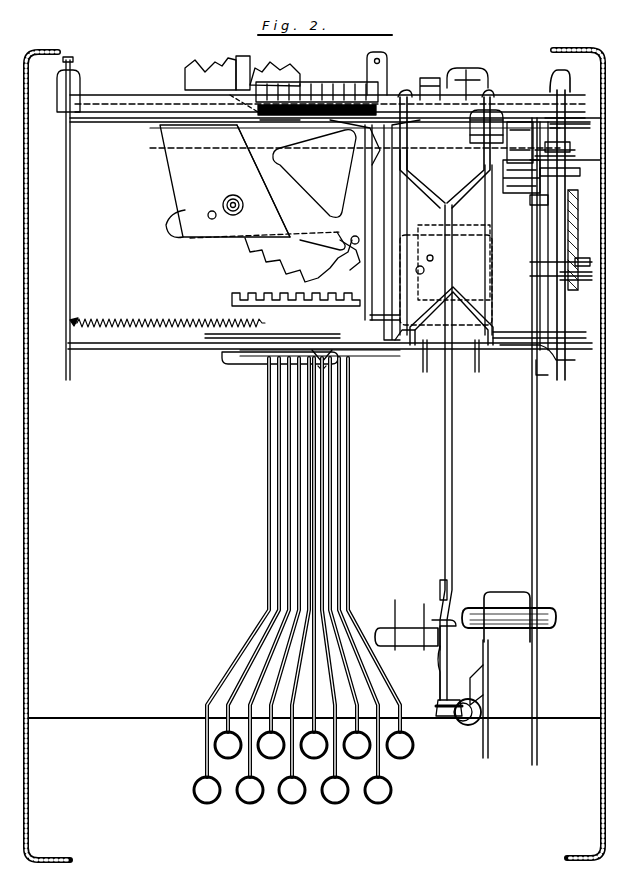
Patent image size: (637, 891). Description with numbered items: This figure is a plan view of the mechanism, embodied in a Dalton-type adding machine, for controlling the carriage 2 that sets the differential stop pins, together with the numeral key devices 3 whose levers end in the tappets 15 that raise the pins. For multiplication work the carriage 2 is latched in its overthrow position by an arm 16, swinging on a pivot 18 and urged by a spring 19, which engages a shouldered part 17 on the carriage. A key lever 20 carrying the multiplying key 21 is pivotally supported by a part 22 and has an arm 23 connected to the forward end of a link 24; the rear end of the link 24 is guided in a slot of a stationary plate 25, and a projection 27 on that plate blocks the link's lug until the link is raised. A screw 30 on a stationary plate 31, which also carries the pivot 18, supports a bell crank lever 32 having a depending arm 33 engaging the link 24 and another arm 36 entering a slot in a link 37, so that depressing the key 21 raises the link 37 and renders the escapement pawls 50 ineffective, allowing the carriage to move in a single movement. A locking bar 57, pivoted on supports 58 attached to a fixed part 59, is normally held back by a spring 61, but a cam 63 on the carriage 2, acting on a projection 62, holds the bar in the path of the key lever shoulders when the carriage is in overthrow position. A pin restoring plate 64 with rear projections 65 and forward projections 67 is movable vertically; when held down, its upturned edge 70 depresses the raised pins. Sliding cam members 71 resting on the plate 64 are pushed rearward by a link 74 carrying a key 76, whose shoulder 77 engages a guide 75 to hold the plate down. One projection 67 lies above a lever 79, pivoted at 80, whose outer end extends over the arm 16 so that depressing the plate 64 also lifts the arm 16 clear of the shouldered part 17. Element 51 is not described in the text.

The carriage 2 is at (382, 122).
The numeral key devices 3 is at (340, 488).
The tappets 15 is at (360, 240).
The arm 16 is at (566, 146).
The shouldered part 17 is at (573, 126).
The pivot 18 is at (580, 262).
The spring 19 is at (575, 276).
The key lever 20 is at (487, 656).
The key 21 is at (470, 728).
The part 22 is at (504, 608).
The arm 23 is at (537, 634).
The link 24 is at (536, 462).
The stationary plate 25 is at (510, 118).
The projection 27 is at (566, 118).
The screw 30 is at (568, 166).
The stationary plate 31 is at (570, 212).
The bell crank lever 32 is at (545, 190).
The depending arm 33 is at (560, 152).
The arm 36 is at (480, 118).
The link 37 is at (466, 82).
The pawls 50 is at (388, 250).
The bar 51 is at (564, 172).
The locking bar 57 is at (250, 352).
The supports 58 is at (318, 352).
The fixed part 59 is at (186, 348).
The spring 61 is at (316, 363).
The projection 62 is at (265, 325).
The cam 63 is at (242, 296).
The plate 64 is at (492, 296).
The projections 65 is at (412, 110).
The projections 67 is at (423, 352).
The upturned edge 70 is at (365, 168).
The sliding members 71 is at (445, 150).
The link 74 is at (455, 460).
The guide 75 is at (456, 620).
The key 76 is at (448, 720).
The shoulder 77 is at (448, 644).
The lever 79 is at (530, 352).
The pivot 80 is at (417, 348).